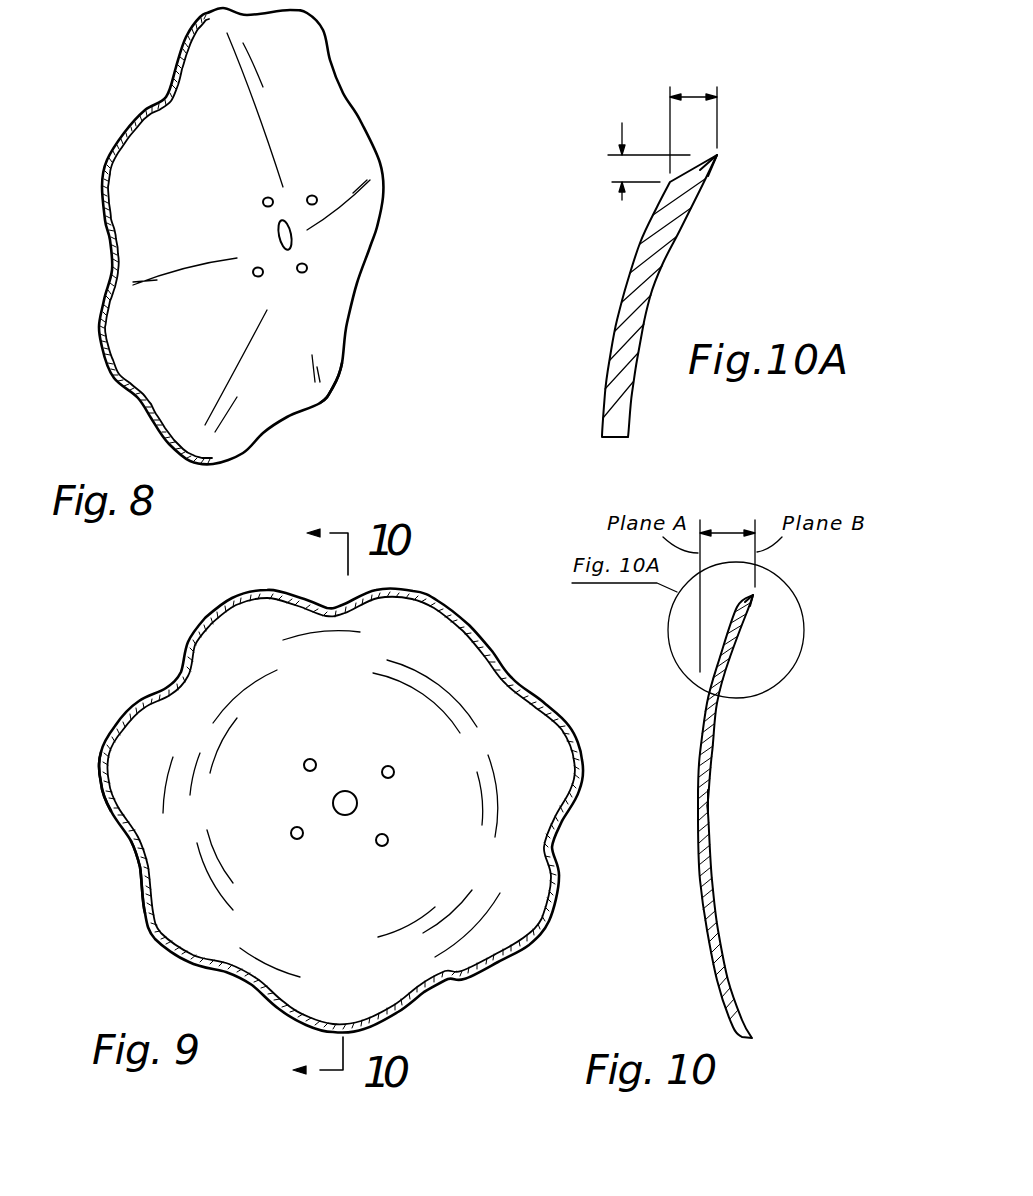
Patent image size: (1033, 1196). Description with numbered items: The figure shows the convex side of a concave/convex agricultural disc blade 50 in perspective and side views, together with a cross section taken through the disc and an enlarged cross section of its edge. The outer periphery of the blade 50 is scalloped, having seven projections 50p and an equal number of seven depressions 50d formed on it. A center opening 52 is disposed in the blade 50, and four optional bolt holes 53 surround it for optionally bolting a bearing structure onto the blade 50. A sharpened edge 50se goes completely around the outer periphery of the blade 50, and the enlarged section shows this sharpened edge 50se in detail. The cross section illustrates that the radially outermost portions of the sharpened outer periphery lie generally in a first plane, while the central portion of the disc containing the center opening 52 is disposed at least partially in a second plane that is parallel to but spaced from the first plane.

In FIG. 8, the concave/convex agricultural disc blade 50 is at (390, 155).
In FIG. 9, the concave/convex agricultural disc blade 50 is at (122, 655).
In FIG. 10, the concave/convex agricultural disc blade 50 is at (742, 770).
In FIG. 10A, the concave/convex agricultural disc blade 50 is at (693, 270).
In FIG. 8, the depressions 50d is at (153, 107).
In FIG. 9, the depressions 50d is at (127, 850).
In FIG. 8, the projections 50p is at (330, 392).
In FIG. 9, the projections 50p is at (103, 753).
In FIG. 8, the center opening 52 is at (295, 240).
In FIG. 9, the center opening 52 is at (350, 793).
In FIG. 10, the center opening 52 is at (707, 805).
In FIG. 8, the bolt holes 53 is at (312, 193).
In FIG. 9, the bolt holes 53 is at (398, 770).
In FIG. 10, the sharpened edge 50se is at (745, 598).
In FIG. 10A, the sharpened edge 50se is at (690, 163).